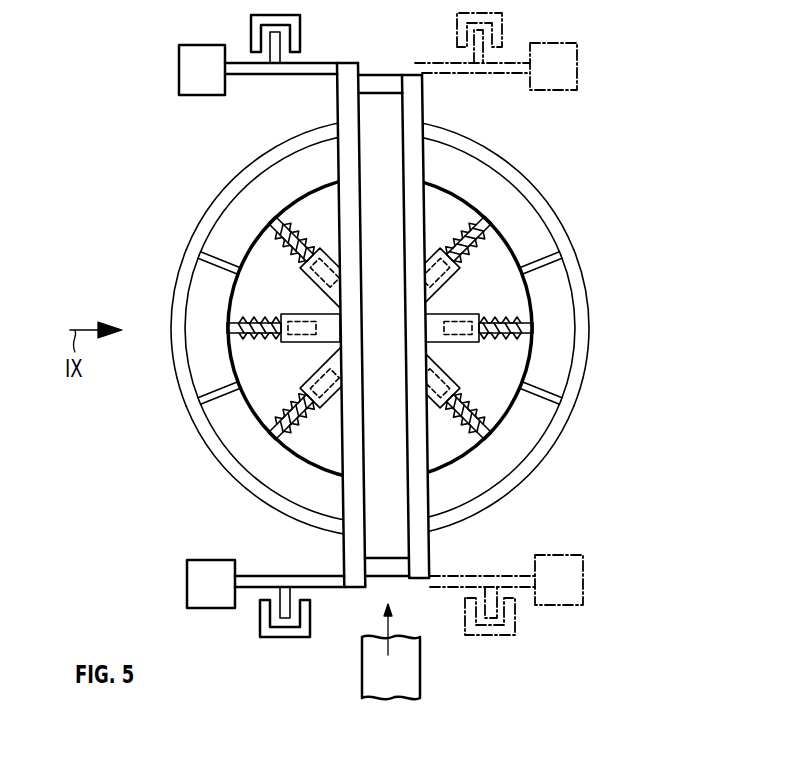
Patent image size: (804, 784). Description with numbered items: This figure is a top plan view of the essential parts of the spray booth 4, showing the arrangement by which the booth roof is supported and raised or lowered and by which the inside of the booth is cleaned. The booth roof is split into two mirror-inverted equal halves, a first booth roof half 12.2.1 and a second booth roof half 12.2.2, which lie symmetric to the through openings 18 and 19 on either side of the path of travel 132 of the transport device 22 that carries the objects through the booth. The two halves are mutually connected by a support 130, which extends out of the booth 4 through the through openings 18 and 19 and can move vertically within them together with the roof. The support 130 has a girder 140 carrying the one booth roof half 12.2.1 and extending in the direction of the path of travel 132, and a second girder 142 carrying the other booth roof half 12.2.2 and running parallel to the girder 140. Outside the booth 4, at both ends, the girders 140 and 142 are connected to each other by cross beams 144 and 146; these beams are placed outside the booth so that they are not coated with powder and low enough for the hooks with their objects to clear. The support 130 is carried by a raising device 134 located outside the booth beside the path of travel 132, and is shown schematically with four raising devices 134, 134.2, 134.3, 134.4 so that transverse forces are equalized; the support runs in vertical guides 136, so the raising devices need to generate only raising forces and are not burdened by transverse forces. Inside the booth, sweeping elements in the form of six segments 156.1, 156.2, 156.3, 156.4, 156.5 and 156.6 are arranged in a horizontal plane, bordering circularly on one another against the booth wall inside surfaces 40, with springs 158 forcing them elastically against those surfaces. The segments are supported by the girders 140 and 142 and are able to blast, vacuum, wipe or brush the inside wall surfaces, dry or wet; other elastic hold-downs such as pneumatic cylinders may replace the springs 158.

The booth 4 is at (590, 333).
The booth wall inside surfaces 40 is at (187, 297).
The segment 156.1 is at (508, 458).
The segment 156.2 is at (563, 363).
The segment 156.3 is at (543, 220).
The segment 156.4 is at (237, 217).
The segment 156.5 is at (207, 372).
The segment 156.6 is at (243, 450).
The booth roof half 12.2.1 is at (250, 287).
The booth roof half 12.2.2 is at (513, 295).
The springs 158 is at (483, 247).
The support 130 is at (340, 102).
The second girder 142 is at (417, 158).
The cross beam 146 is at (380, 80).
The cross beam 144 is at (407, 568).
The raising device 134 is at (193, 590).
The raising device 134.2 is at (190, 70).
The raising device 134.3 is at (572, 575).
The raising device 134.4 is at (565, 66).
The vertical guides 136 is at (257, 32).
The girder 140 is at (345, 160).
The through opening 19 is at (308, 118).
The through opening 18 is at (327, 543).
The path of travel 132 is at (388, 613).
The transport device 22 is at (417, 670).